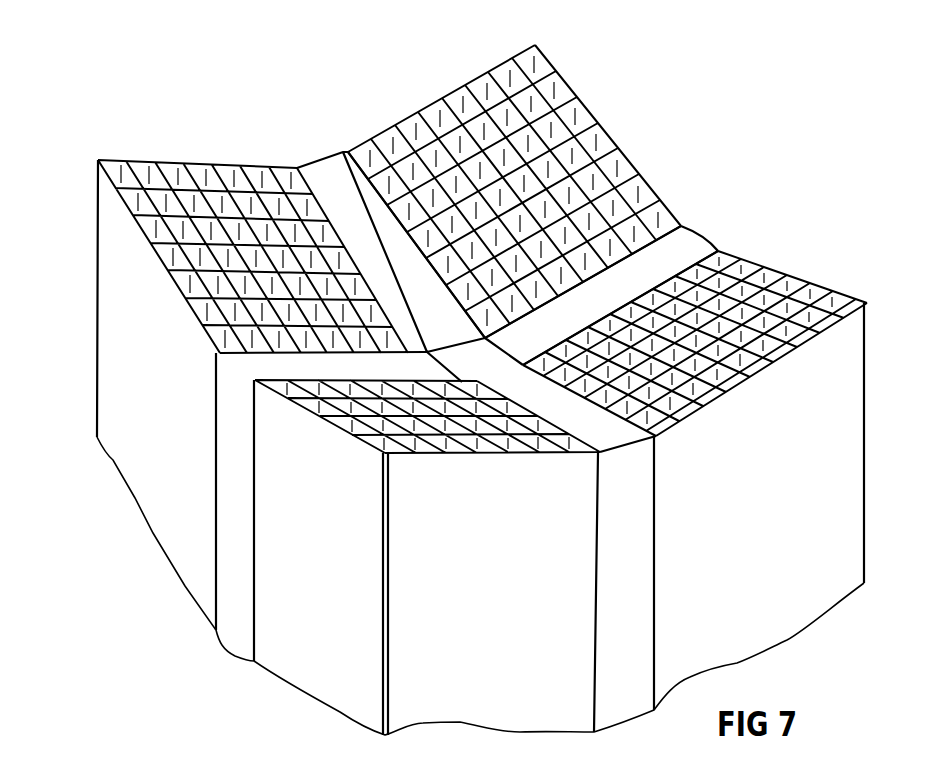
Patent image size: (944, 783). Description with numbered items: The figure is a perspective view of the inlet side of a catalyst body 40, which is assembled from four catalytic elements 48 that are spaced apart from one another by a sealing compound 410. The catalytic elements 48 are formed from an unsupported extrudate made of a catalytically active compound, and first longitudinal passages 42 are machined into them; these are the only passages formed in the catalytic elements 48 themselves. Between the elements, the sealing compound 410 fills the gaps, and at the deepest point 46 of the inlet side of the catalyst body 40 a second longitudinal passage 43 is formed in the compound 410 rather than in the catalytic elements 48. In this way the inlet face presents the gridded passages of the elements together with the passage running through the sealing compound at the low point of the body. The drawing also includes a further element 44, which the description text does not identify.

The catalyst body 40 is at (177, 523).
The first longitudinal passages 42 is at (613, 167).
The second longitudinal passage 43 is at (476, 372).
The right grid panel 44 is at (695, 343).
The deepest point 46 is at (347, 180).
The catalytic elements 48 is at (330, 423).
The sealing compound 410 is at (706, 235).